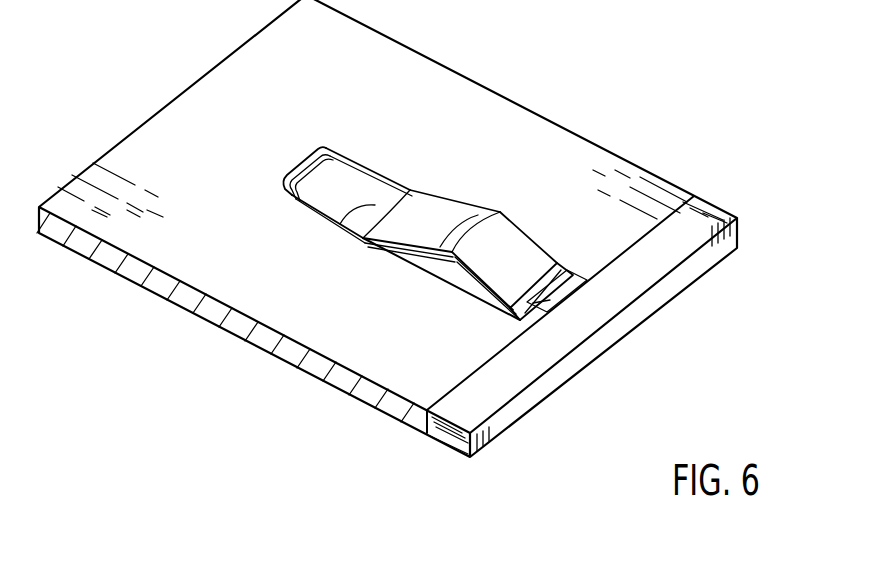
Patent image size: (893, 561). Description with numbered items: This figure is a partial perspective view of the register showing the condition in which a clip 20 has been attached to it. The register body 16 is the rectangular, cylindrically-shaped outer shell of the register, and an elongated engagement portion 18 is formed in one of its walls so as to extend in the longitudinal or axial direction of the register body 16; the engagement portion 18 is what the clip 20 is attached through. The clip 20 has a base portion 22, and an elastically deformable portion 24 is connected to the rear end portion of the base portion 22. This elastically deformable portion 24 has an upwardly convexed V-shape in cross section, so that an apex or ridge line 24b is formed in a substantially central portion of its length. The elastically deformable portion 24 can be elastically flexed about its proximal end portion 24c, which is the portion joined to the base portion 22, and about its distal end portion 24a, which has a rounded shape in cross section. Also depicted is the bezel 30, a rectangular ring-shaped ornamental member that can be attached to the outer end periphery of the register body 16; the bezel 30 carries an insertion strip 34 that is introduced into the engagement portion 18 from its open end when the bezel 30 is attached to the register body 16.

The register body 16 is at (450, 84).
The engagement portion 18 is at (334, 152).
The clip 20 is at (416, 224).
The base portion 22 is at (368, 187).
The elastically deformable portion 24 is at (515, 243).
The distal end portion 24a is at (508, 310).
The ridge line 24b is at (430, 262).
The proximal end portion 24c is at (333, 218).
The bezel 30 is at (588, 348).
The insertion strip 34 is at (573, 277).